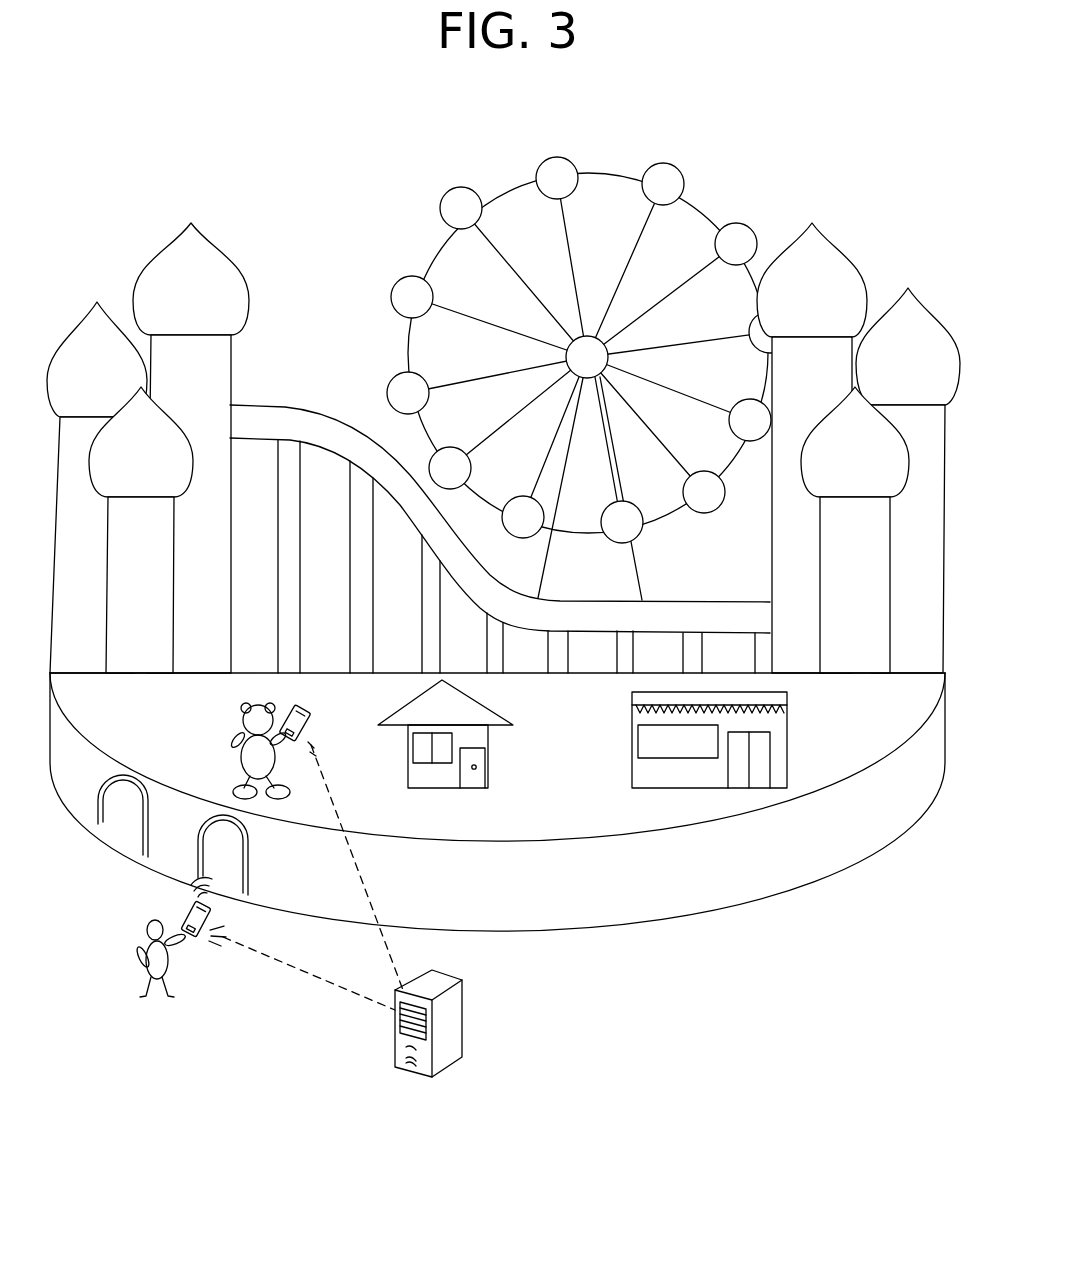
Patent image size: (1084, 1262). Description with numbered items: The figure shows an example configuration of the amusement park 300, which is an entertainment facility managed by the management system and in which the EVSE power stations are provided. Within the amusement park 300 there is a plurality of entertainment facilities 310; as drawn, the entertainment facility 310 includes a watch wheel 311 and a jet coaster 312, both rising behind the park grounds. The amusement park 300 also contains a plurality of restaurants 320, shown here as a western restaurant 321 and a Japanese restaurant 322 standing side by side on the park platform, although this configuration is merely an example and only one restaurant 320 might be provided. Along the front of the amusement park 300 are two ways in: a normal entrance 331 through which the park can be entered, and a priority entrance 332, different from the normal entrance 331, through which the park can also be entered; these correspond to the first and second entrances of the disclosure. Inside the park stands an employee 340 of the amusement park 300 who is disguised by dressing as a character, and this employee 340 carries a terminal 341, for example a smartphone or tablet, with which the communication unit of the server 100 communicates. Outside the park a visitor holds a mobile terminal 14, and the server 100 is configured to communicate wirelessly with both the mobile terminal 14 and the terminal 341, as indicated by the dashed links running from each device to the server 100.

The amusement park 300 is at (94, 240).
The entertainment facility 310 is at (330, 320).
The watch wheel 311 is at (391, 298).
The jet coaster 312 is at (372, 438).
The restaurant 320 is at (612, 789).
The western restaurant 321 is at (632, 758).
The Japanese restaurant 322 is at (488, 748).
The normal entrance 331 is at (122, 823).
The priority entrance 332 is at (227, 878).
The employee 340 is at (231, 735).
The terminal 341 is at (306, 727).
The mobile terminal 14 is at (192, 938).
The server 100 is at (443, 983).